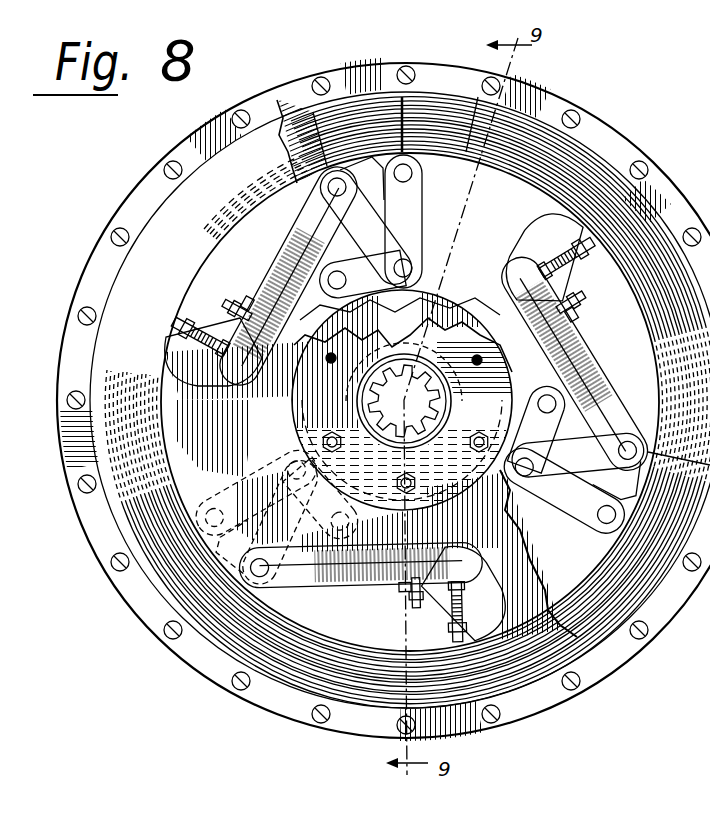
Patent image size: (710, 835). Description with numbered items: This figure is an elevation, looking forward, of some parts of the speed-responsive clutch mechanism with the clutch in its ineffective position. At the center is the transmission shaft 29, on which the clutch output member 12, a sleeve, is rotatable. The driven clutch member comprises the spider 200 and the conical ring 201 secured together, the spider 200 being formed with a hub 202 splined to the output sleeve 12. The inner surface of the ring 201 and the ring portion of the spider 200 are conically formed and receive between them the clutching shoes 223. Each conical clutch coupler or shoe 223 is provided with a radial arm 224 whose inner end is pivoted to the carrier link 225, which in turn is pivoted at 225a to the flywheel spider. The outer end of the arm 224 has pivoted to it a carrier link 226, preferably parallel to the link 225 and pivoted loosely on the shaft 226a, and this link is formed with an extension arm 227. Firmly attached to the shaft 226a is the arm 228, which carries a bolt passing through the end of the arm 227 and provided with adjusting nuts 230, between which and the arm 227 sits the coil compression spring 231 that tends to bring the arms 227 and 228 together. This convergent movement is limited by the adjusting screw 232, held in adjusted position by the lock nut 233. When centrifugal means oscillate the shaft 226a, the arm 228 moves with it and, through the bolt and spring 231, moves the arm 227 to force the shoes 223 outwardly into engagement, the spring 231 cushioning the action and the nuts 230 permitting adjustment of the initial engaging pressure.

The conical ring 201 is at (383, 399).
The spider 200 is at (521, 167).
The clutch shoe 223 is at (377, 140).
The radial arm 224 is at (418, 208).
The carrier link 225 is at (352, 268).
The pivot 225a is at (272, 268).
The carrier link 226 is at (358, 198).
The shaft 226a is at (327, 191).
The extension arm 227 is at (291, 232).
The arm 228 is at (401, 347).
The adjusting nuts 230 is at (178, 333).
The coil compression spring 231 is at (212, 330).
The adjusting screw 232 is at (233, 292).
The lock nut 233 is at (247, 297).
The hub 202 is at (390, 441).
The clutch output member 12 is at (444, 431).
The shaft 29 is at (404, 401).